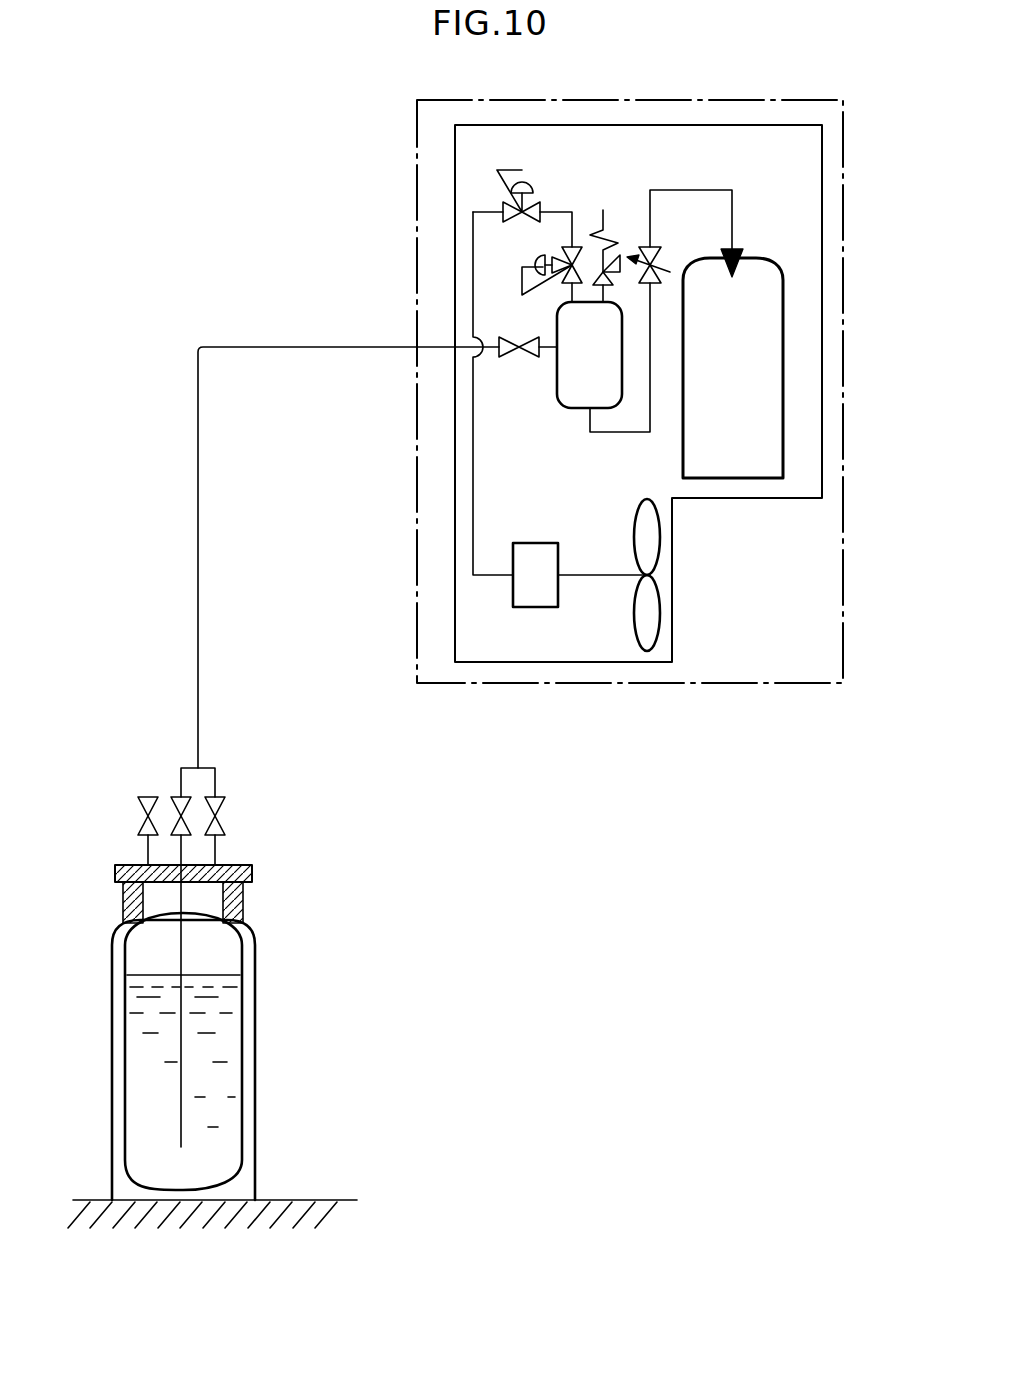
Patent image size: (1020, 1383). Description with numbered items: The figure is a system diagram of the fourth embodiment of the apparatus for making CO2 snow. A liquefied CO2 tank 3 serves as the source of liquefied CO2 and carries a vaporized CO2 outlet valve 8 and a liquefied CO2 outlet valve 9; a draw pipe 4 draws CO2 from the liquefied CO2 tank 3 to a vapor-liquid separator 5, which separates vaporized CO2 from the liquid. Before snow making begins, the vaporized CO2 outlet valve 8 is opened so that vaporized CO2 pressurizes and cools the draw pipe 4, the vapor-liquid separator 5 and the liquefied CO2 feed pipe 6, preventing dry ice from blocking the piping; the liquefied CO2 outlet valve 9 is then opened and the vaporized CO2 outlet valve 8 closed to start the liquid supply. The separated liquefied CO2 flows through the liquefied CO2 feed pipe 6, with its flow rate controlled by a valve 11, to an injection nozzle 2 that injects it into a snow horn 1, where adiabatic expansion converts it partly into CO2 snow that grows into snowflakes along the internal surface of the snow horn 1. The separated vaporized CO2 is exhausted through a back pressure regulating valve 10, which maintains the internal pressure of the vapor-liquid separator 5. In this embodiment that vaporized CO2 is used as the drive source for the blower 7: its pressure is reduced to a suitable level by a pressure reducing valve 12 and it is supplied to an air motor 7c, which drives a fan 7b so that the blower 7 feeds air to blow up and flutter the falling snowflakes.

The snow horn 1 is at (792, 348).
The injection nozzle 2 is at (735, 248).
The liquefied CO2 tank 3 is at (245, 1033).
The draw pipe 4 is at (297, 346).
The vapor-liquid separator 5 is at (565, 403).
The liquefied CO2 feed pipe 6 is at (620, 433).
The blower 7 is at (581, 628).
The fan 7b is at (653, 617).
The air motor 7c is at (518, 595).
The vaporized CO2 outlet valve 8 is at (218, 805).
The liquefied CO2 outlet valve 9 is at (180, 800).
The back pressure regulating valve 10 is at (572, 247).
The valve 11 is at (645, 250).
The pressure reducing valve 12 is at (524, 196).